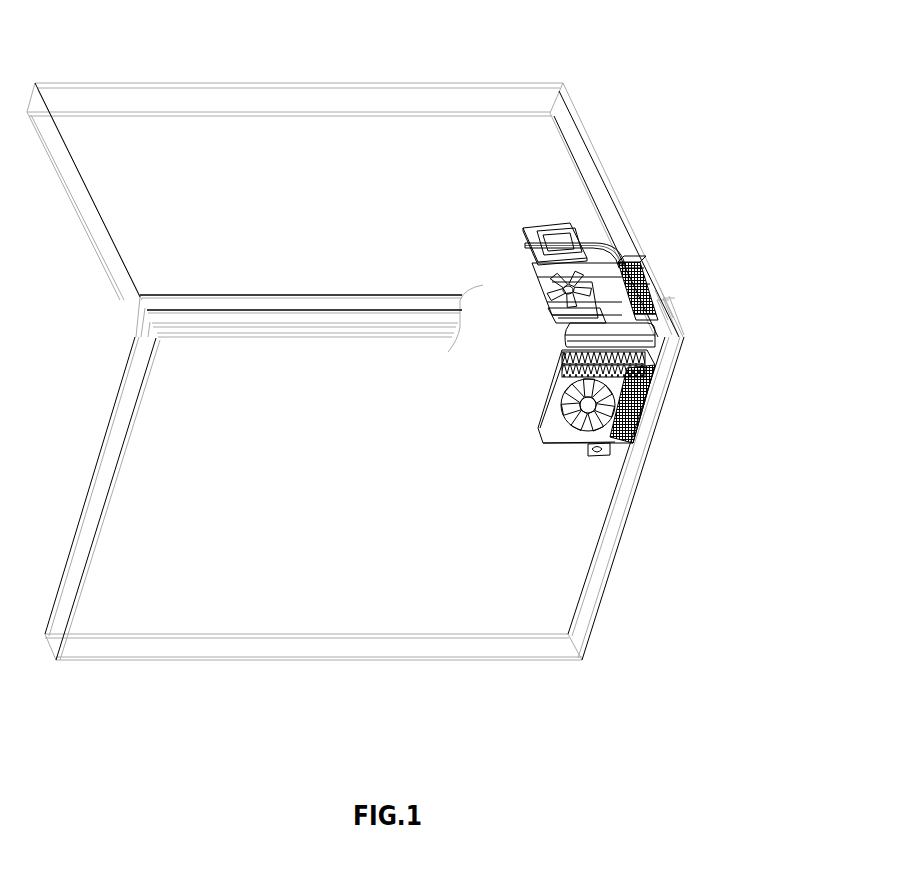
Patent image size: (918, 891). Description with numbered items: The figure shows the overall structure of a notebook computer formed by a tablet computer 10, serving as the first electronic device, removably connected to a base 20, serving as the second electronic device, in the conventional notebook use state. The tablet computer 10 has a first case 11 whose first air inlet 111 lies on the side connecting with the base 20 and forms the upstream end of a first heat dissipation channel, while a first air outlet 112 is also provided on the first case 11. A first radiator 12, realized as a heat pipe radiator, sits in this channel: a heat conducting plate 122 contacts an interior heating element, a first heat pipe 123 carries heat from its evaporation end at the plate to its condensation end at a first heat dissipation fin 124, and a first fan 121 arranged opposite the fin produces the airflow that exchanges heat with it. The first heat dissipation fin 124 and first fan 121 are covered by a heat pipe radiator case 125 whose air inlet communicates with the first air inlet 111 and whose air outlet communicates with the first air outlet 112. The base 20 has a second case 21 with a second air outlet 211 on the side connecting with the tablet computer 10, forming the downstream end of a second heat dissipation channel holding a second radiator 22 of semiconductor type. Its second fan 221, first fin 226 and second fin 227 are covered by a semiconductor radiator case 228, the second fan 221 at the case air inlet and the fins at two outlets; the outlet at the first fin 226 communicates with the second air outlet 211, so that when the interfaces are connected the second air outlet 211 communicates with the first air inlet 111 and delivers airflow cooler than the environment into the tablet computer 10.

The tablet computer 10 is at (103, 52).
The first case 11 is at (445, 100).
The first radiator 12 is at (743, 112).
The first fan 121 is at (640, 272).
The heat conducting plate 122 is at (578, 232).
The first heat pipe 123 is at (605, 258).
The first heat dissipation fin 124 is at (635, 300).
The heat pipe radiator case 125 is at (585, 280).
The first air outlet 112 is at (653, 278).
The first air inlet 111 is at (610, 322).
The base 20 is at (120, 699).
The second case 21 is at (437, 645).
The second air outlet 211 is at (610, 337).
The second radiator 22 is at (743, 343).
The second fan 221 is at (645, 423).
The first fin 226 is at (643, 358).
The second fin 227 is at (640, 403).
The semiconductor radiator case 228 is at (608, 445).